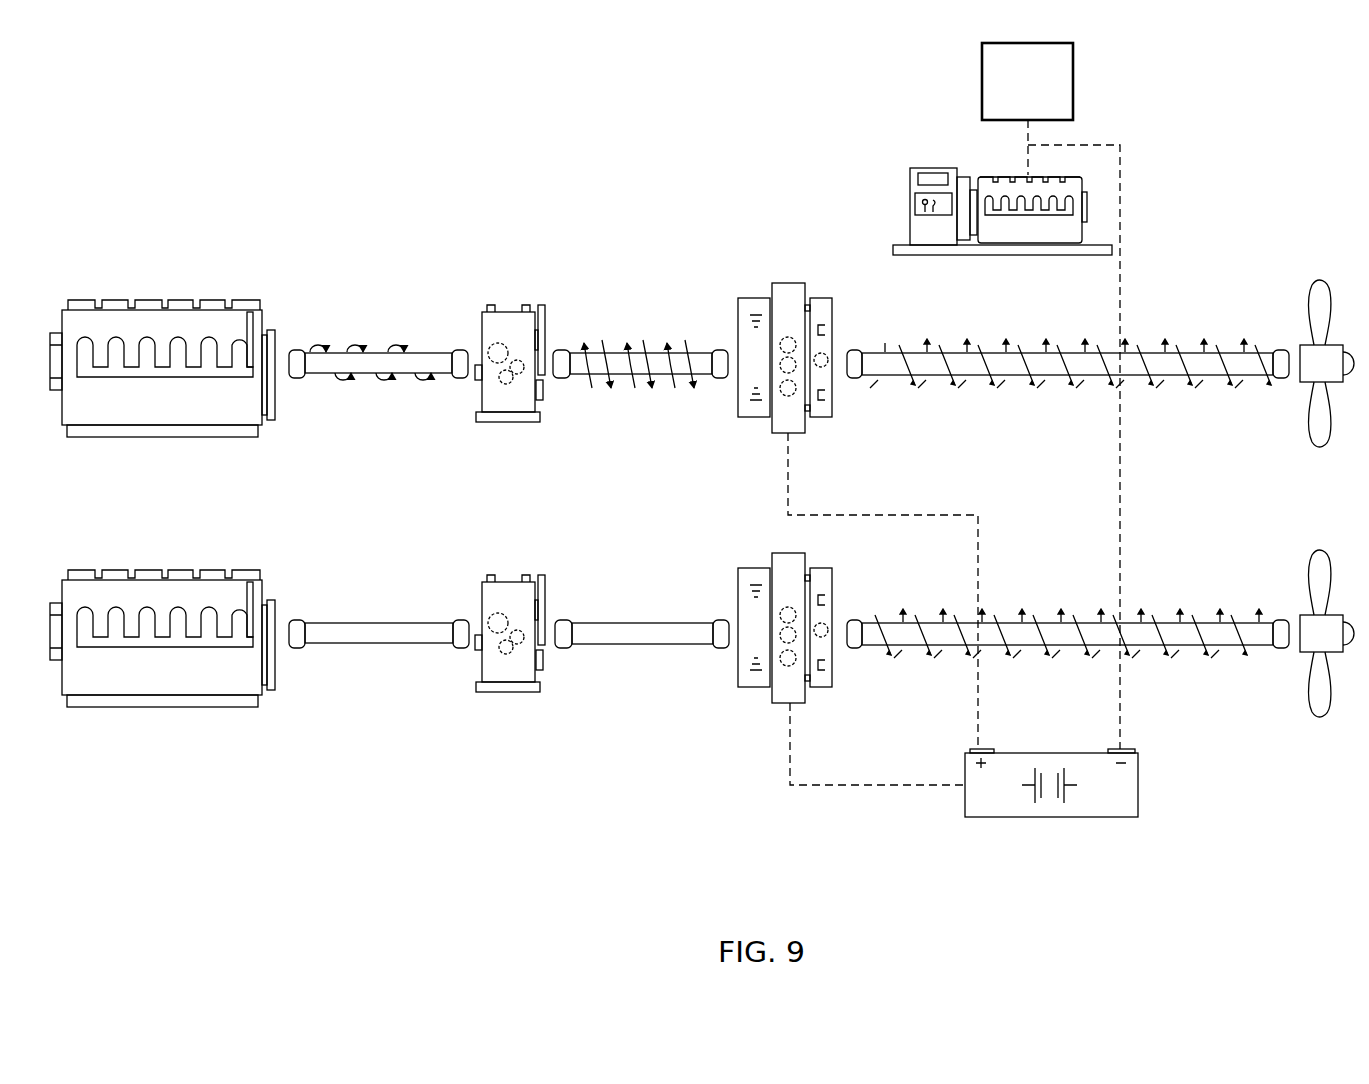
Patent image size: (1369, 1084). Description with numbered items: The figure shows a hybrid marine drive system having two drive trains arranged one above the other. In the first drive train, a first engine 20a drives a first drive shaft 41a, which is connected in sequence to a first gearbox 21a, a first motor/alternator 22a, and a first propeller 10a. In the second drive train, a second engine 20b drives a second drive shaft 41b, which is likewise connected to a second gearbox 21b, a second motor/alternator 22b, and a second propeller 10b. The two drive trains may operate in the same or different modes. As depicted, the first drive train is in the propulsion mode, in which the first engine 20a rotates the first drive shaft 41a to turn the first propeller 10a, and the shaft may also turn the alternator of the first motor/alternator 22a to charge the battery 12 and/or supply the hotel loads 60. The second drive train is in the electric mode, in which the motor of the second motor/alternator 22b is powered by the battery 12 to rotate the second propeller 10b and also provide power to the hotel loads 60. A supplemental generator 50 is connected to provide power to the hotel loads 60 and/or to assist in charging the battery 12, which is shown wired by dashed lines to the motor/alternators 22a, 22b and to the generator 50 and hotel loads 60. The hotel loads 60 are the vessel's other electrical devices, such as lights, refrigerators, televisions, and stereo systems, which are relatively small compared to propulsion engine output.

The first propeller 10a is at (1318, 298).
The second propeller 10b is at (1318, 568).
The battery 12 is at (1050, 752).
The first engine 20a is at (158, 322).
The second engine 20b is at (158, 592).
The first gearbox 21a is at (512, 322).
The second gearbox 21b is at (512, 592).
The first motor/alternator 22a is at (792, 305).
The second motor/alternator 22b is at (790, 552).
The first drive shaft 41a is at (343, 364).
The second drive shaft 41b is at (356, 633).
The generator 50 is at (933, 168).
The hotel loads 60 is at (1075, 80).